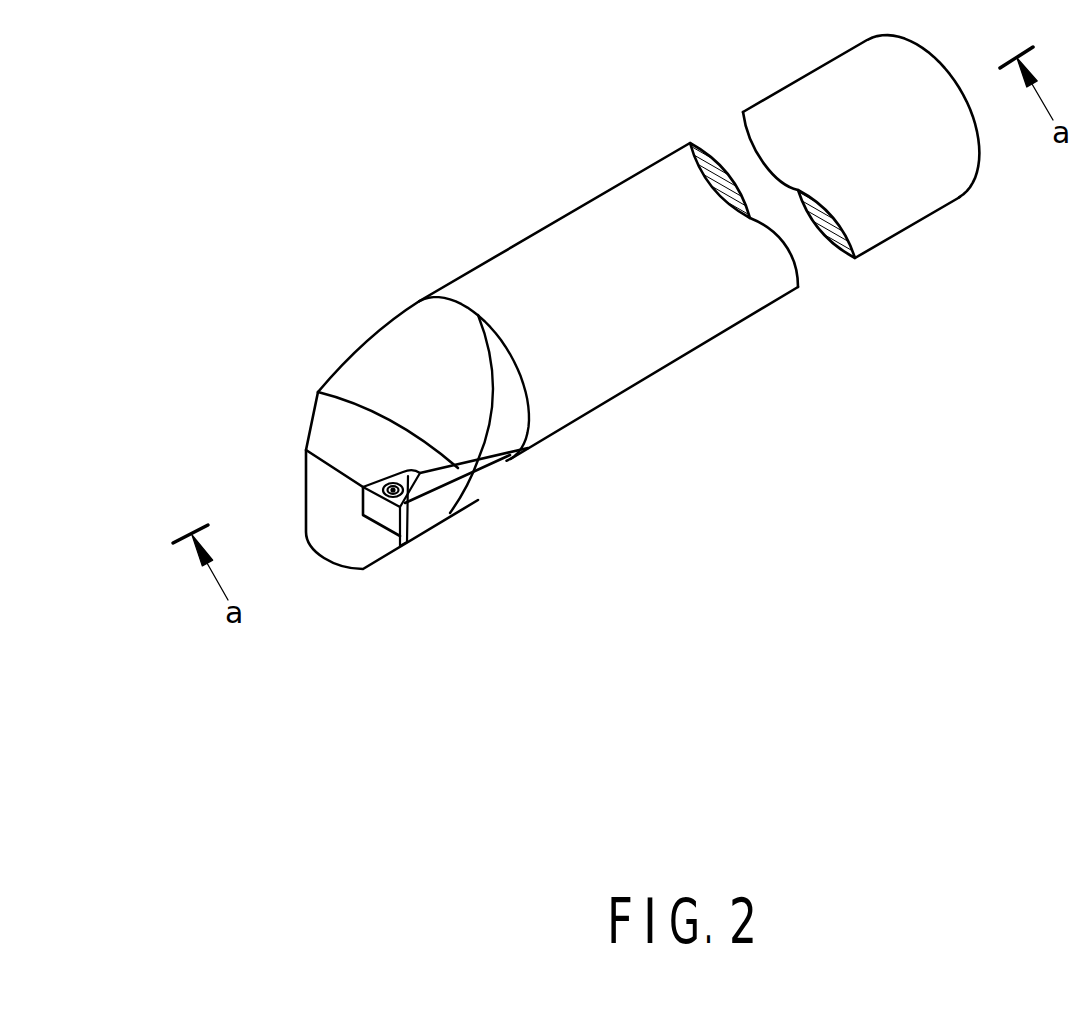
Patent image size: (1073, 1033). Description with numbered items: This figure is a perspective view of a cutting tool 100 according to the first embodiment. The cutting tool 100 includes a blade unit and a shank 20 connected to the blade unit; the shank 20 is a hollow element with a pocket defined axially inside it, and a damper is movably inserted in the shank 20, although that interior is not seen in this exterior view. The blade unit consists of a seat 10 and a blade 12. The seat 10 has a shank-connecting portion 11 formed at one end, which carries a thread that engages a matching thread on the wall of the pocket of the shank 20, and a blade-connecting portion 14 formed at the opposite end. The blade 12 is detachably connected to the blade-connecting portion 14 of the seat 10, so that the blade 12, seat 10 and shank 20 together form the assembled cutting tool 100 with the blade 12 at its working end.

The cutting tool 100 is at (569, 338).
The seat 10 is at (383, 347).
The shank-connecting portion 11 is at (513, 427).
The blade 12 is at (388, 510).
The blade-connecting portion 14 is at (325, 490).
The shank 20 is at (673, 313).